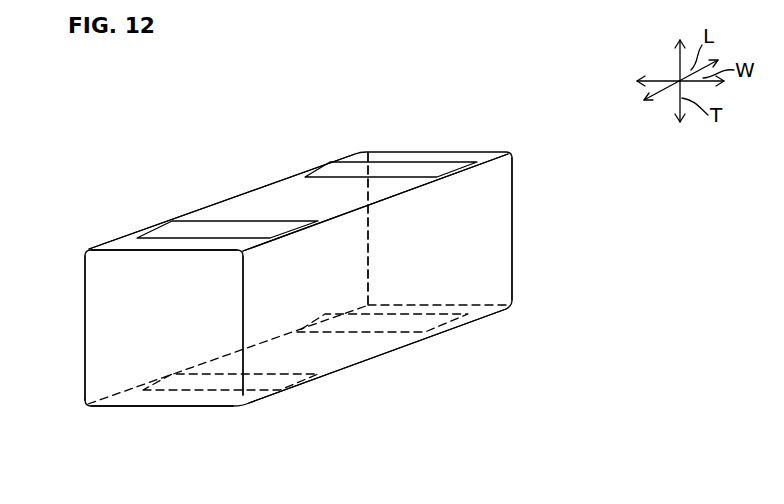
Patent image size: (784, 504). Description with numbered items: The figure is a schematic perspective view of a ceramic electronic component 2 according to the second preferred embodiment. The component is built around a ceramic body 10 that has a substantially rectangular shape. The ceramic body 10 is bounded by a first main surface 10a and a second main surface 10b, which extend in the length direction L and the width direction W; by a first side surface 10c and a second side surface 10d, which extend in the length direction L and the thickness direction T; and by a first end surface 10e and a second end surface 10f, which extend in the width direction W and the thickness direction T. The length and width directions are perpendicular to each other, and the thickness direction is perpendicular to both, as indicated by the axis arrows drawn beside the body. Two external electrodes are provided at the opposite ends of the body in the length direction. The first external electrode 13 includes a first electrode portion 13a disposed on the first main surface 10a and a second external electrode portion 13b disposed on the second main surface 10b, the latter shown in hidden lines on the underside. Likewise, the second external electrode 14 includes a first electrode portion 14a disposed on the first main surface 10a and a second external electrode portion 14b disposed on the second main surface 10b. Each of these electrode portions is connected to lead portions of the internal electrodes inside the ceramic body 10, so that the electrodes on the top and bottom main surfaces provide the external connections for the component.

The ceramic electronic component 2 is at (317, 262).
The ceramic body 10 is at (340, 283).
The first main surface 10a is at (318, 190).
The second main surface 10b is at (347, 352).
The first side surface 10c is at (252, 203).
The second side surface 10d is at (387, 342).
The first end surface 10e is at (190, 407).
The second end surface 10f is at (493, 242).
The first external electrode 13 is at (162, 255).
The first electrode portion 13a is at (170, 228).
The second external electrode portion 13b is at (150, 380).
The second external electrode 14 is at (462, 193).
The first electrode portion 14a is at (447, 166).
The second external electrode portion 14b is at (470, 313).